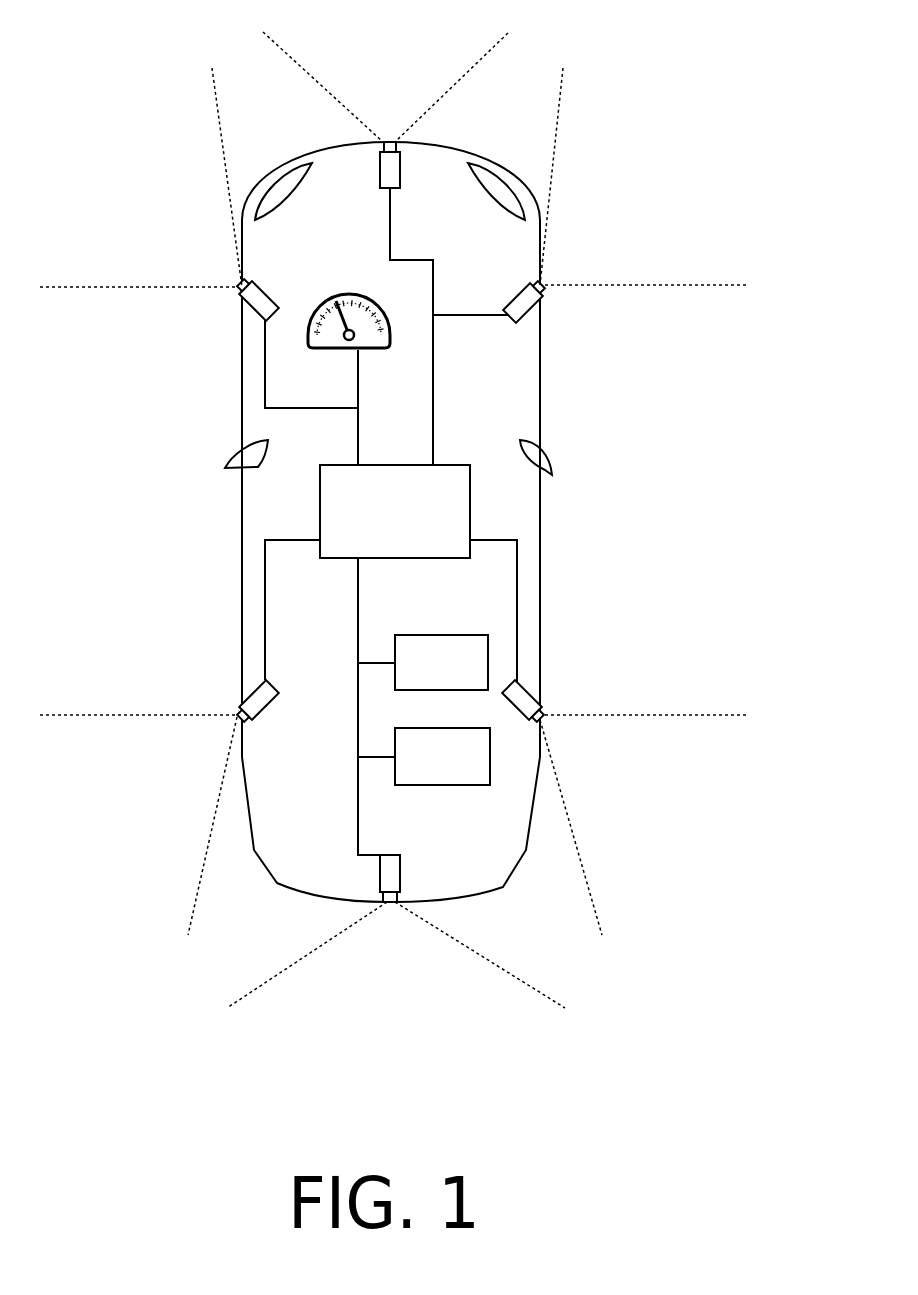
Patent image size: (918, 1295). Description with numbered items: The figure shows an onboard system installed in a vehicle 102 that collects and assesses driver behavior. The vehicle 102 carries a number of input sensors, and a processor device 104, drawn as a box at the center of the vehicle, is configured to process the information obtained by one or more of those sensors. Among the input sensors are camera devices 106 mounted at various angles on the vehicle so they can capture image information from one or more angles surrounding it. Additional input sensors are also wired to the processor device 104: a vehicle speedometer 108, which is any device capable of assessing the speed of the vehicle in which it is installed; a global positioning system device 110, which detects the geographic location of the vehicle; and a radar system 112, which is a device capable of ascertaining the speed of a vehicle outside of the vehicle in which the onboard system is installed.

The vehicle 102 is at (520, 183).
The processor device 104 is at (460, 463).
The camera device 106 is at (390, 142).
The vehicle speedometer 108 is at (347, 293).
The global positioning system (GPS) device 110 is at (463, 635).
The radar system 112 is at (462, 728).